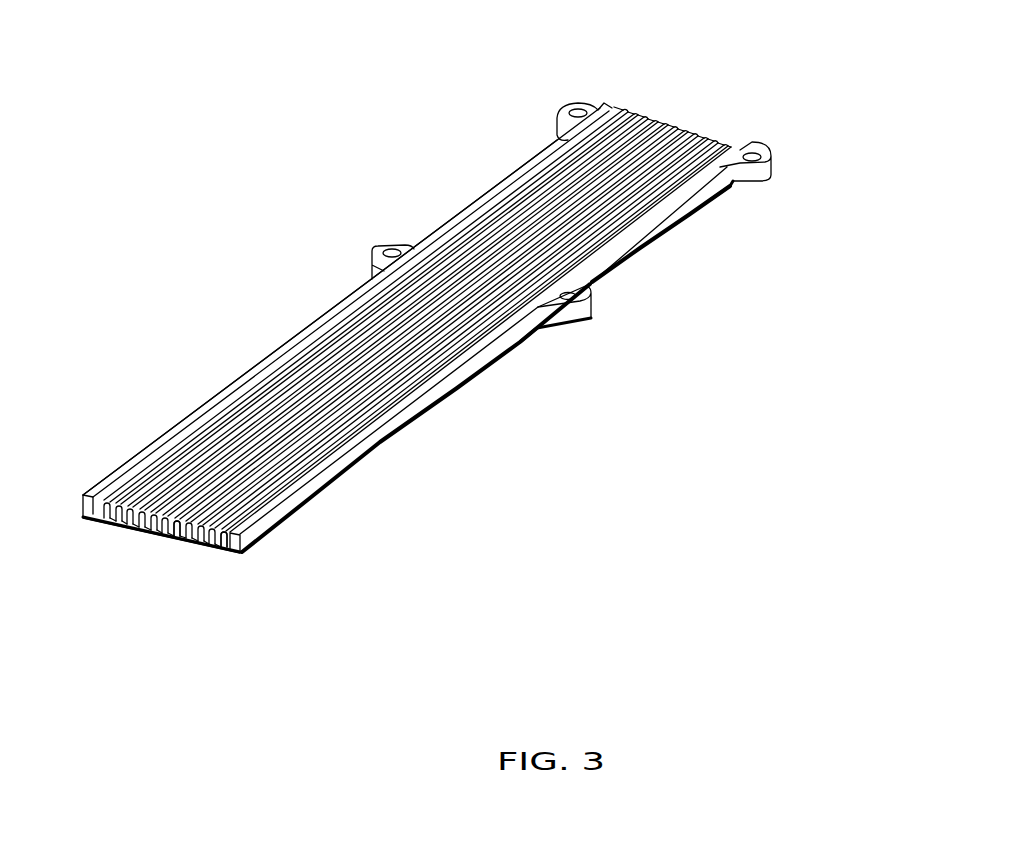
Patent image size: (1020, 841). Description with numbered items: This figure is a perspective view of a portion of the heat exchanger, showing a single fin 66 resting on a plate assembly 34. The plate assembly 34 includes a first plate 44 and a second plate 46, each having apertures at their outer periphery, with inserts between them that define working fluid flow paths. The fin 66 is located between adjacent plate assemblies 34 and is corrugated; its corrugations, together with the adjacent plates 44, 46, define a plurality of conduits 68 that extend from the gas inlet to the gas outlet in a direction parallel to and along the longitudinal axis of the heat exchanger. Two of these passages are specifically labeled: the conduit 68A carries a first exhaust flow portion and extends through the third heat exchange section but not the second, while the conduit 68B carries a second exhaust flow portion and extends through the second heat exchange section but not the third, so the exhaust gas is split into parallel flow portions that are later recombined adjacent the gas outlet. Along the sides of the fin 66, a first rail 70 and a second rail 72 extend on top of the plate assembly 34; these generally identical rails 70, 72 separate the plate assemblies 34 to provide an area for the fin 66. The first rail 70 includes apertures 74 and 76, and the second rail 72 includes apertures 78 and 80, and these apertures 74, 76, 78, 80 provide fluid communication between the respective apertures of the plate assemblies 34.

The plate assembly 34 is at (268, 540).
The first plate 44 is at (220, 535).
The second plate 46 is at (113, 515).
The fin 66 is at (648, 135).
The conduits 68 is at (138, 517).
The conduit 68A is at (222, 540).
The conduit 68B is at (178, 518).
The first rail 70 is at (285, 345).
The second rail 72 is at (385, 437).
The aperture 74 is at (578, 108).
The aperture 76 is at (392, 250).
The aperture 78 is at (590, 289).
The aperture 80 is at (752, 154).